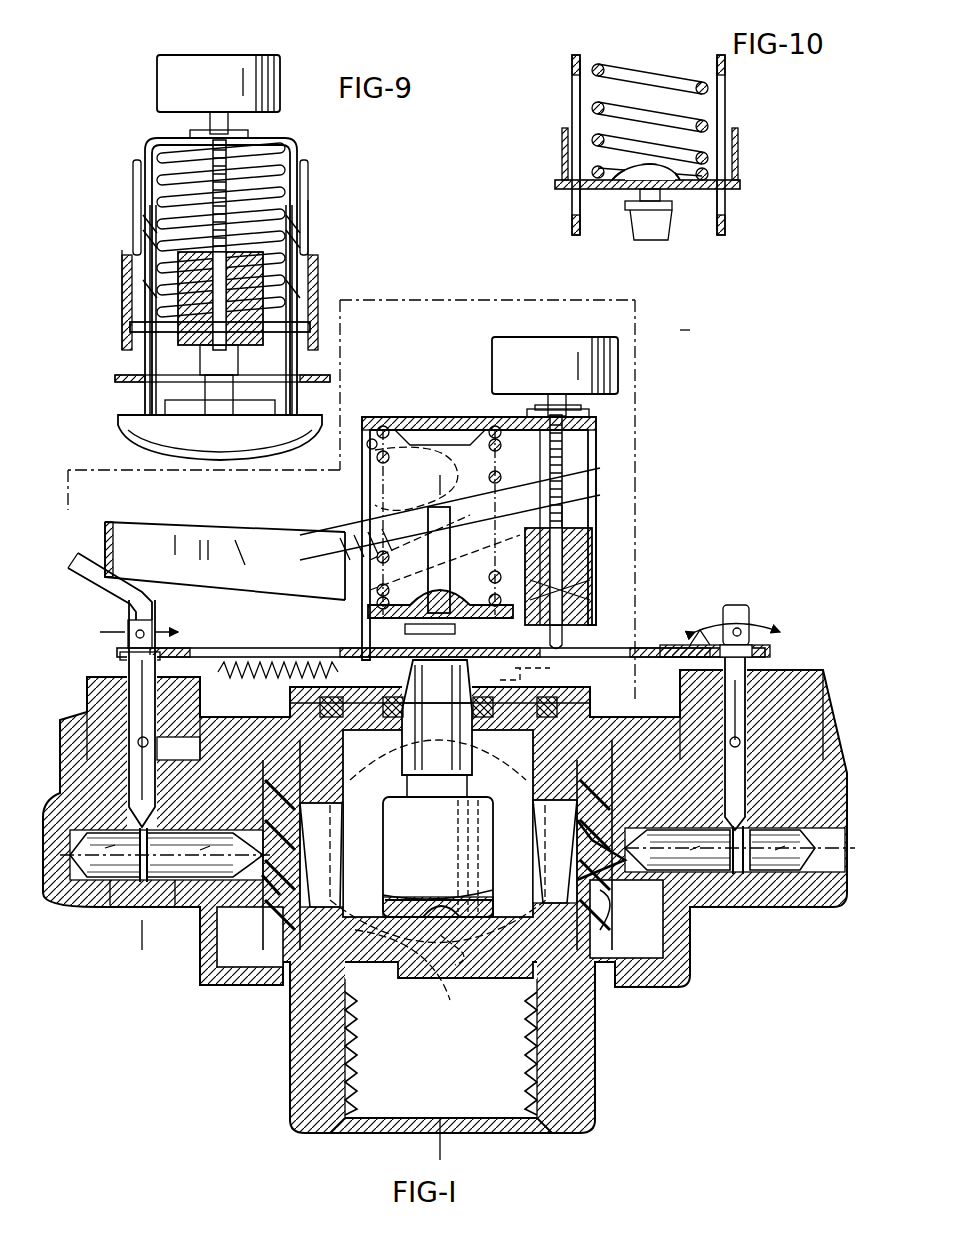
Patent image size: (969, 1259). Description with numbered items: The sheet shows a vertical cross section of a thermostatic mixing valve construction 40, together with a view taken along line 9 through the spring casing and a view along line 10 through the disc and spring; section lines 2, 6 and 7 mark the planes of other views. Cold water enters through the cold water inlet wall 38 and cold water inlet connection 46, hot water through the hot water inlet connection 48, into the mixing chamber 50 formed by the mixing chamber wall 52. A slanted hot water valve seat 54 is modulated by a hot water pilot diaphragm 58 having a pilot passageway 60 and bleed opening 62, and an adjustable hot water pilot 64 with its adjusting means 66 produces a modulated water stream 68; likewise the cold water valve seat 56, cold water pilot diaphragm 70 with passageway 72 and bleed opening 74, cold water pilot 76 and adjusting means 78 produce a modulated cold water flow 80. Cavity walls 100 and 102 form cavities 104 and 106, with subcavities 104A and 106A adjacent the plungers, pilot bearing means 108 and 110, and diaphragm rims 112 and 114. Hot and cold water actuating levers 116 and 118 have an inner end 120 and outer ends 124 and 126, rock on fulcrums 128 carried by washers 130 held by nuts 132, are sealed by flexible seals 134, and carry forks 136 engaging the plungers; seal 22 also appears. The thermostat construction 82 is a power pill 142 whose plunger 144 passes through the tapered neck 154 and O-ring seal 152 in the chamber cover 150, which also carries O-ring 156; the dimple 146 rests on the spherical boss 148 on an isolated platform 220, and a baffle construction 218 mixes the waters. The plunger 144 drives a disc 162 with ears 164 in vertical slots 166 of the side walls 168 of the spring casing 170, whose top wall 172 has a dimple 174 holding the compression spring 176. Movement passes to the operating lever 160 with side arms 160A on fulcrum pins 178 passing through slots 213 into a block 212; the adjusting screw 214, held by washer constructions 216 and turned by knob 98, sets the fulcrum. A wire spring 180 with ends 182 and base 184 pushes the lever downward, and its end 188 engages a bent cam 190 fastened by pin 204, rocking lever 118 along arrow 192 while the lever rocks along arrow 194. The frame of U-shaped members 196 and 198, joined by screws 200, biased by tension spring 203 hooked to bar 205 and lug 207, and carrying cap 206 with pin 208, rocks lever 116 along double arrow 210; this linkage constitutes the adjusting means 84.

In FIG. 1, the section line 2— 2 is at (55, 905).
In FIG. 1, the section line 6— 6 is at (685, 300).
In FIG. 1, the section line 7— 7 is at (80, 793).
In FIG. 1, the section line 9— 9 is at (628, 316).
In FIG. 1, the section line 10— 10 is at (445, 485).
In FIG. 1, the seal 22 is at (285, 800).
In FIG. 1, the cold water inlet wall 38 is at (588, 1056).
In FIG. 1, the valve construction 40 is at (732, 492).
In FIG. 1, the cold water inlet connection 46 is at (322, 820).
In FIG. 1, the hot water inlet connection 48 is at (600, 940).
In FIG. 1, the mixing chamber 50 is at (470, 790).
In FIG. 1, the mixing chamber wall 52 is at (410, 755).
In FIG. 1, the hot water valve seat 54 is at (578, 772).
In FIG. 1, the cold water valve seat 56 is at (285, 790).
In FIG. 1, the hot water pilot diaphragm 58 is at (605, 905).
In FIG. 1, the hot water pilot passageway 60 is at (600, 830).
In FIG. 1, the hot water bleed opening 62 is at (545, 748).
In FIG. 1, the hot water pilot 64 is at (595, 868).
In FIG. 1, the hot water pilot adjusting means 66 is at (785, 648).
In FIG. 1, the modulated water stream 68 is at (545, 818).
In FIG. 1, the cold water pilot diaphragm 70 is at (268, 900).
In FIG. 1, the cold water pilot passageway 72 is at (265, 870).
In FIG. 1, the cold water bleed opening 74 is at (280, 760).
In FIG. 1, the cold water pilot 76 is at (275, 905).
In FIG. 1, the cold water pilot adjusting means 78 is at (82, 600).
In FIG. 1, the modulated cold water flow 80 is at (385, 850).
In FIG. 1, the thermostat construction 82 is at (375, 962).
In FIG. 1, the thermostat construction responsive adjusting means 84 is at (315, 522).
In FIG. 9, the adjusting knob 98 is at (158, 68).
In FIG. 1, the adjusting knob 98 is at (494, 348).
In FIG. 1, the hot water pilot cavity wall 100 is at (672, 985).
In FIG. 1, the cold water cavity wall 102 is at (222, 988).
In FIG. 1, the hot water cavity 104 is at (652, 953).
In FIG. 1, the hot water subcavity 104A is at (718, 882).
In FIG. 1, the cold water cavity 106 is at (248, 990).
In FIG. 1, the cold water subcavity 106A is at (198, 905).
In FIG. 1, the pilot bearing means 108 is at (785, 880).
In FIG. 1, the pilot bearing means 110 is at (85, 880).
In FIG. 1, the diaphragm rim 112 is at (622, 975).
In FIG. 1, the diaphragm rim 114 is at (275, 990).
In FIG. 1, the hot water actuating lever 116 is at (752, 705).
In FIG. 1, the cold water actuating lever 118 is at (130, 680).
In FIG. 1, the inner end 120 is at (735, 805).
In FIG. 1, the outer end 124 is at (758, 661).
In FIG. 1, the outer end 126 is at (120, 656).
In FIG. 1, the fulcrum 128 is at (150, 740).
In FIG. 1, the washer 130 is at (200, 755).
In FIG. 1, the externally threaded nut 132 is at (100, 704).
In FIG. 1, the flexible seal 134 is at (146, 905).
In FIG. 1, the fork 136 is at (140, 880).
In FIG. 1, the power pill 142 is at (470, 878).
In FIG. 10, the plunger 144 is at (635, 180).
In FIG. 1, the plunger 144 is at (450, 602).
In FIG. 1, the dimple 146 is at (455, 935).
In FIG. 1, the spherical boss 148 is at (440, 935).
In FIG. 1, the chamber cover 150 is at (408, 722).
In FIG. 1, the O-ring seal 152 is at (510, 650).
In FIG. 10, the tapered neck 154 is at (650, 236).
In FIG. 1, the tapered neck 154 is at (432, 690).
In FIG. 1, the O-ring 156 is at (575, 672).
In FIG. 9, the operating lever 160 is at (130, 282).
In FIG. 1, the operating lever 160 is at (130, 525).
In FIG. 9, the side arms 160A is at (138, 298).
In FIG. 10, the side arms 160A is at (562, 138).
In FIG. 1, the side arms 160A is at (255, 586).
In FIG. 10, the disc 162 is at (688, 190).
In FIG. 1, the disc 162 is at (352, 625).
In FIG. 10, the ears 164 is at (555, 188).
In FIG. 10, the vertical slots 166 is at (574, 100).
In FIG. 1, the vertical slots 166 is at (448, 560).
In FIG. 9, the side walls 168 is at (150, 188).
In FIG. 10, the side walls 168 is at (572, 63).
In FIG. 1, the side walls 168 is at (584, 448).
In FIG. 1, the spring casing 170 is at (368, 402).
In FIG. 9, the top wall 172 is at (272, 138).
In FIG. 1, the top wall 172 is at (496, 417).
In FIG. 1, the downward dimple 174 is at (440, 417).
In FIG. 9, the compression spring 176 is at (168, 150).
In FIG. 10, the compression spring 176 is at (640, 70).
In FIG. 1, the compression spring 176 is at (495, 482).
In FIG. 9, the fulcrum pins 178 is at (128, 336).
In FIG. 1, the fulcrum pins 178 is at (578, 596).
In FIG. 9, the U-shaped wire spring 180 is at (312, 212).
In FIG. 1, the U-shaped wire spring 180 is at (288, 535).
In FIG. 9, the ends 182 is at (134, 172).
In FIG. 1, the ends 182 is at (355, 495).
In FIG. 1, the base 184 is at (215, 523).
In FIG. 1, the end 188 is at (104, 528).
In FIG. 1, the bent cam 190 is at (98, 560).
In FIG. 1, the arrow 192 is at (125, 628).
In FIG. 1, the arrow 194 is at (158, 570).
In FIG. 9, the U-shaped member 196 is at (118, 384).
In FIG. 1, the U-shaped member 196 is at (345, 648).
In FIG. 1, the U-shaped member 198 is at (770, 645).
In FIG. 1, the screws 200 is at (690, 632).
In FIG. 1, the tension spring 203 is at (280, 655).
In FIG. 1, the pin 204 is at (145, 630).
In FIG. 1, the bar 205 is at (220, 665).
In FIG. 1, the cap 206 is at (740, 605).
In FIG. 1, the lug 207 is at (410, 634).
In FIG. 1, the pin 208 is at (742, 630).
In FIG. 1, the double arrow 210 is at (770, 620).
In FIG. 9, the block 212 is at (180, 346).
In FIG. 1, the block 212 is at (585, 556).
In FIG. 9, the slots 213 is at (290, 247).
In FIG. 1, the slots 213 is at (576, 524).
In FIG. 9, the adjusting screw 214 is at (216, 196).
In FIG. 1, the adjusting screw 214 is at (566, 468).
In FIG. 1, the washer constructions 216 is at (560, 406).
In FIG. 1, the baffle construction 218 is at (292, 1002).
In FIG. 1, the isolated platform 220 is at (425, 960).